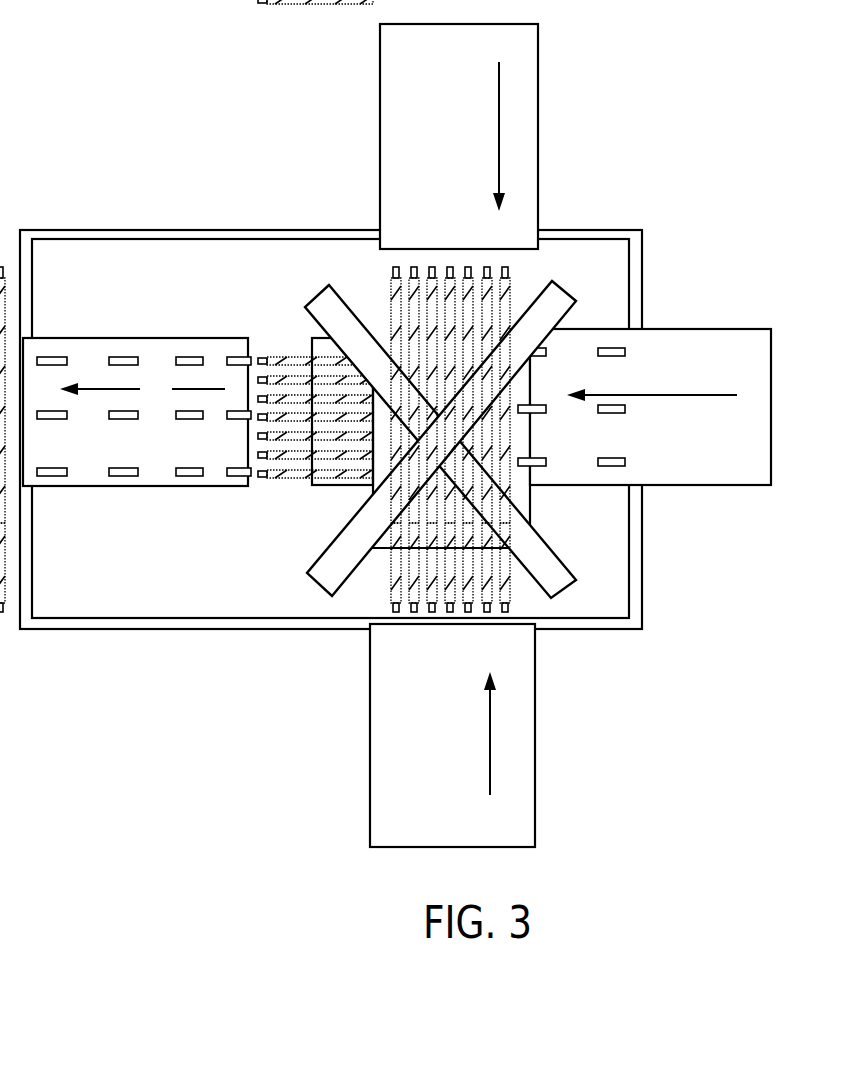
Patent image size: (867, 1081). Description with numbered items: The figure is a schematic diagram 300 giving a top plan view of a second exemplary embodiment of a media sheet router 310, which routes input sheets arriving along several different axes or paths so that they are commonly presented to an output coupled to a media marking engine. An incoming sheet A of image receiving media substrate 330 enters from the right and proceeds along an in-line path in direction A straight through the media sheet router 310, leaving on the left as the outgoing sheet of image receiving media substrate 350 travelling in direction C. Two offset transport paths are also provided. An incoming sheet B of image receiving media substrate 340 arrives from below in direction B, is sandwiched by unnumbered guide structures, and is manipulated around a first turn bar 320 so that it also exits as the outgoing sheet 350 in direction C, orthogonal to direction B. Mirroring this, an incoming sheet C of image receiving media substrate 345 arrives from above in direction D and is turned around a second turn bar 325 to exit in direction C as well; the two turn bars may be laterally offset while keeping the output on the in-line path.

The schematic diagram 300 is at (124, 124).
The media sheet router 310 is at (177, 238).
The first turn bar 320 is at (307, 299).
The second turn bar 325 is at (560, 284).
The incoming sheet A of image receiving media substrate 330 is at (722, 480).
The incoming sheet B of image receiving media substrate 340 is at (378, 729).
The incoming sheet C of image receiving media substrate 345 is at (385, 150).
The outgoing sheet of image receiving media substrate 350 is at (155, 481).